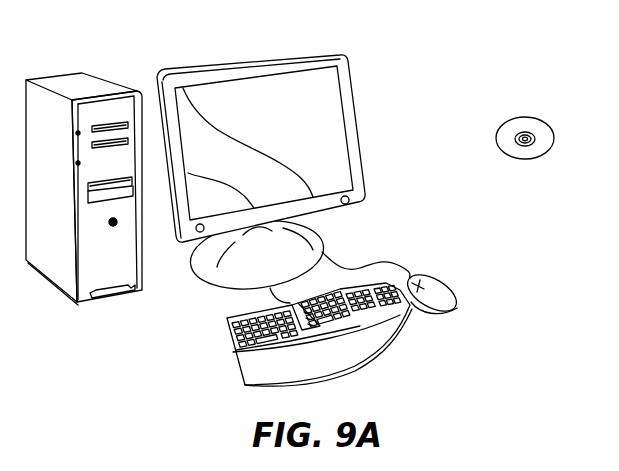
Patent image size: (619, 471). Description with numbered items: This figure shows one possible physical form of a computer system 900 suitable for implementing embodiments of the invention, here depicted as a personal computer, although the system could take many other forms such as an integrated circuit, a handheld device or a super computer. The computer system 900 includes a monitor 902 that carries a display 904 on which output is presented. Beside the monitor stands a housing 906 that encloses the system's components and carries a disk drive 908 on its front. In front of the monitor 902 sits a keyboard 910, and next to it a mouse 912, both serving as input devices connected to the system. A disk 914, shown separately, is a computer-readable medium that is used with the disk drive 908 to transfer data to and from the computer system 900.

The computer system 900 is at (458, 45).
The monitor 902 is at (358, 147).
The display 904 is at (320, 92).
The housing 906 is at (72, 84).
The disk drive 908 is at (128, 187).
The keyboard 910 is at (234, 358).
The mouse 912 is at (455, 289).
The disk 914 is at (541, 117).